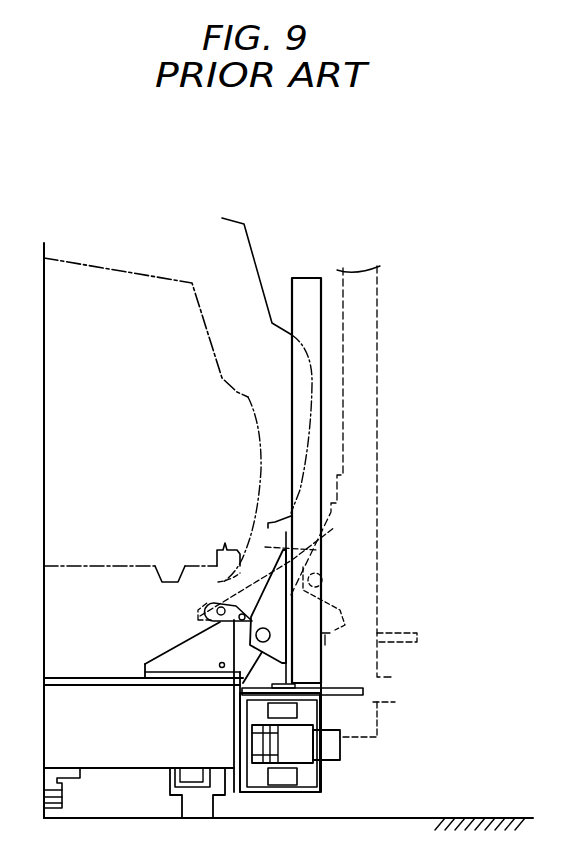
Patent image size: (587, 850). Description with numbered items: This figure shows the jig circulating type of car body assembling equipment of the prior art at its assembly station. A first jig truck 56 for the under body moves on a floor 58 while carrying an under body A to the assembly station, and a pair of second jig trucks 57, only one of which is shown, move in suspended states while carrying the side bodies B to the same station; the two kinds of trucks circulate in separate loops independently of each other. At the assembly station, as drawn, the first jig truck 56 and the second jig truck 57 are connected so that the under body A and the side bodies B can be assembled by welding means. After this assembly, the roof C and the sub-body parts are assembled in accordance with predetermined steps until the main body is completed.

The first jig truck 56 is at (108, 770).
The second jig truck 57 is at (305, 278).
The floor 58 is at (473, 818).
The under body A is at (137, 570).
The side body B is at (253, 250).
The roof C is at (120, 288).